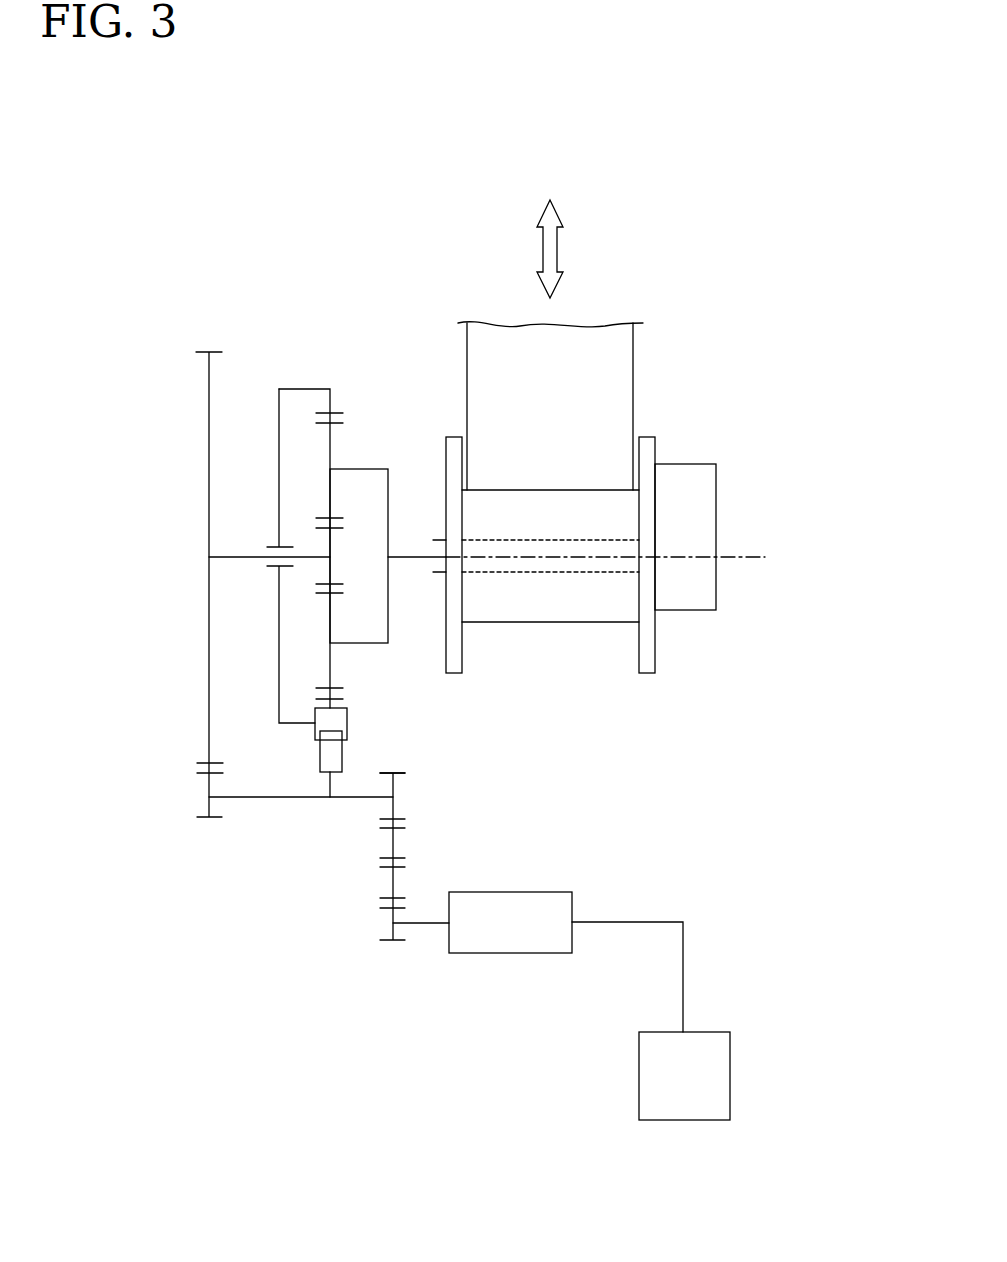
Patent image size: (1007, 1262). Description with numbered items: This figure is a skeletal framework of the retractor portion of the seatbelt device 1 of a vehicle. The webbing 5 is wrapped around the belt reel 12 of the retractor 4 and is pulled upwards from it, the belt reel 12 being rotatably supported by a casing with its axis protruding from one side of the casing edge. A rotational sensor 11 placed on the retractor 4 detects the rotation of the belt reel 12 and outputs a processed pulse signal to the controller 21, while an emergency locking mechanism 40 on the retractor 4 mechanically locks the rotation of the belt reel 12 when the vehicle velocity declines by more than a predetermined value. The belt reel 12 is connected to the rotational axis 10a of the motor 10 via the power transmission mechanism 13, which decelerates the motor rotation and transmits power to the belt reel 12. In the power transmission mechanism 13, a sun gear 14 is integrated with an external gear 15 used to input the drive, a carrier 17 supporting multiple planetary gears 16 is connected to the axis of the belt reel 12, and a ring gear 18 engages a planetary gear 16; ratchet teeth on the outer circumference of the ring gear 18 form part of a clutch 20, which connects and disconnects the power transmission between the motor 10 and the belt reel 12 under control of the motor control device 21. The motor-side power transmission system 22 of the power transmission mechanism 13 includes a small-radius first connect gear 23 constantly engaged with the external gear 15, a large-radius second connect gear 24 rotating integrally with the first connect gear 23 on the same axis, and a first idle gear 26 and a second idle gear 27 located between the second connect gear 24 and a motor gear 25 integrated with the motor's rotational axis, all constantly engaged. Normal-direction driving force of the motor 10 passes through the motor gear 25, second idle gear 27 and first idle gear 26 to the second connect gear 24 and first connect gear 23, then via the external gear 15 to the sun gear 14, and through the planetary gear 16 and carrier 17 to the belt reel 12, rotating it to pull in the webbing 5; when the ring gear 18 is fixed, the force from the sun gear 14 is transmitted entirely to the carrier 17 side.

The seatbelt device 1 is at (743, 775).
The retractor 4 is at (662, 448).
The webbing 5 is at (610, 372).
The emergency locking mechanism 40 is at (700, 507).
The rotational sensor 11 is at (455, 675).
The belt reel 12 is at (605, 573).
The power transmission mechanism 13 is at (329, 380).
The sun gear 14 is at (329, 568).
The external gear 15 is at (205, 350).
The planetary gear 16 is at (329, 443).
The carrier 17 is at (358, 467).
The ring gear 18 is at (280, 643).
The clutch 20 is at (353, 748).
The motor-side power transmission system 22 is at (357, 828).
The first connect gear 23 is at (209, 800).
The second connect gear 24 is at (393, 786).
The motor gear 25 is at (392, 932).
The first idle gear 26 is at (393, 841).
The second idle gear 27 is at (393, 883).
The motor 10 is at (510, 937).
The rotational axis 10a is at (423, 923).
The controller 21 is at (710, 1075).